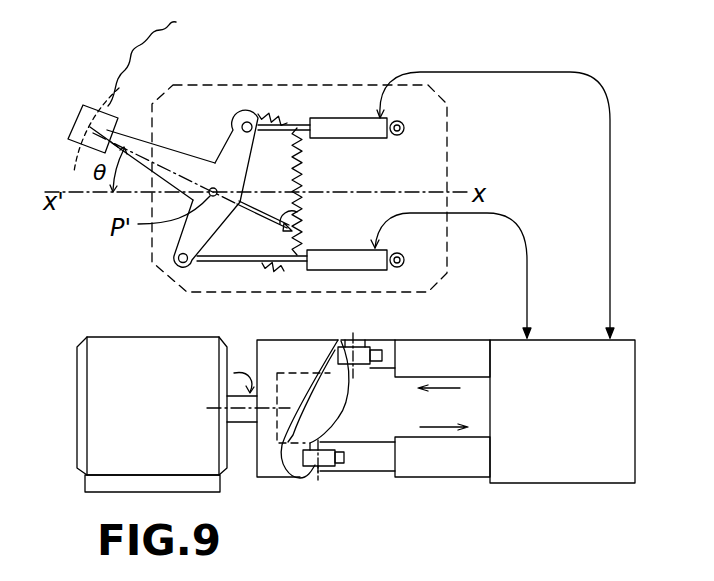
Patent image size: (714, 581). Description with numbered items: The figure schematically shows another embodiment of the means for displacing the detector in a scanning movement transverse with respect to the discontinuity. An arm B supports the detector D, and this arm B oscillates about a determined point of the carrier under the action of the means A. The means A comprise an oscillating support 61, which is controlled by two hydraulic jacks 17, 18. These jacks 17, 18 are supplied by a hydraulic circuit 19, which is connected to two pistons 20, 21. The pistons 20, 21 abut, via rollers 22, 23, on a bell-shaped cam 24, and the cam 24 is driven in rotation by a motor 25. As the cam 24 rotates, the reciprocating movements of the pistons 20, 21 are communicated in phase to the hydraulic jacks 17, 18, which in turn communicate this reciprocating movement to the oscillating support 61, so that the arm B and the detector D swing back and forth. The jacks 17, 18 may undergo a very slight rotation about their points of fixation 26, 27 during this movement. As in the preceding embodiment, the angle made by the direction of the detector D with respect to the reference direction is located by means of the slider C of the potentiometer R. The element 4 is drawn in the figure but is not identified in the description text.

The lead wire 4 is at (148, 57).
The hydraulic jack 17 is at (338, 132).
The hydraulic jack 18 is at (350, 262).
The hydraulic circuit 19 is at (573, 428).
The piston 20 is at (410, 470).
The piston 21 is at (452, 354).
The roller 22 is at (363, 358).
The roller 23 is at (323, 460).
The bell-shaped cam 24 is at (272, 470).
The motor 25 is at (168, 422).
The point of fixation 26 is at (405, 128).
The point of fixation 27 is at (405, 260).
The oscillating support 61 is at (232, 127).
The means A is at (312, 76).
The arm B is at (163, 150).
The slider C is at (306, 214).
The detector D is at (84, 105).
The potentiometer R is at (266, 268).